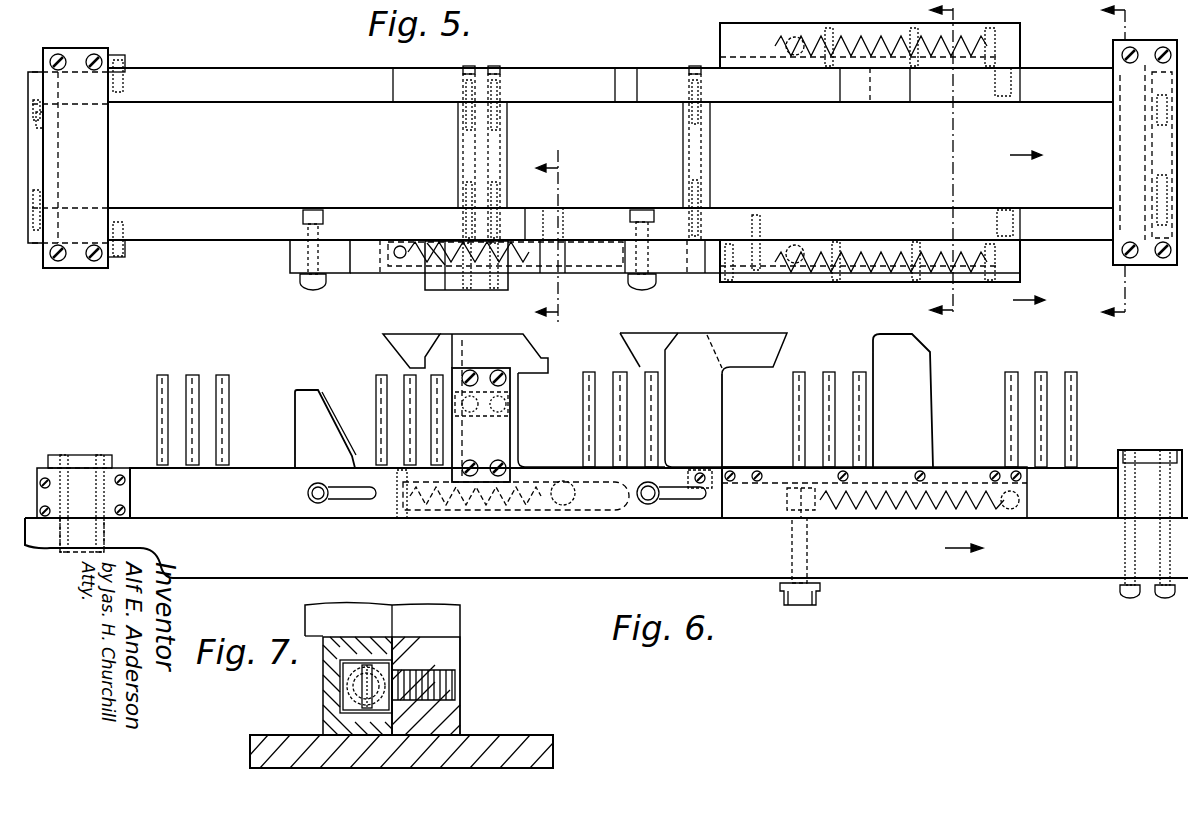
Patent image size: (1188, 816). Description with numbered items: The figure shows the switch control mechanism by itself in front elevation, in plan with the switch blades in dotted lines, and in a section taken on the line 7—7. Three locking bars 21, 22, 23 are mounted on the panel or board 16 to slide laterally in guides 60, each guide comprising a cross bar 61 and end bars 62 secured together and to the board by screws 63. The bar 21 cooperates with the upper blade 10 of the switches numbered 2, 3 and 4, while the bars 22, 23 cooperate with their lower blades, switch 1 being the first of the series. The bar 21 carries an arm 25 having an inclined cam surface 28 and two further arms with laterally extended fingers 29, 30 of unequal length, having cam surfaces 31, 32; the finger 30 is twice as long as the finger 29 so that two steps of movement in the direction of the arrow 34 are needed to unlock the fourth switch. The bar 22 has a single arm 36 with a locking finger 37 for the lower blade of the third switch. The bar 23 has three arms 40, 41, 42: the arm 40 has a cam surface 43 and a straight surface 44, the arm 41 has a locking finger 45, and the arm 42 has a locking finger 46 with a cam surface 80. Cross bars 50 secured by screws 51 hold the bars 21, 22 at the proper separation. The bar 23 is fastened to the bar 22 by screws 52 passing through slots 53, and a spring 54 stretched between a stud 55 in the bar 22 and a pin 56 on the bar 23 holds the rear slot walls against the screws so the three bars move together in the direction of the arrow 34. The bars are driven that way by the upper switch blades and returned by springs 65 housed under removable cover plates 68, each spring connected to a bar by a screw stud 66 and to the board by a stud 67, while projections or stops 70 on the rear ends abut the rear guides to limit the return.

In FIG. 6, the switch 1 is at (1005, 396).
In FIG. 6, the switch 2 is at (778, 421).
In FIG. 5, the switch 3 is at (953, 168).
In FIG. 6, the switch 3 is at (583, 405).
In FIG. 5, the switch 4 is at (1126, 171).
In FIG. 6, the switch 4 is at (296, 382).
In FIG. 5, the section line 7 is at (550, 241).
In FIG. 6, the upper blade 10 is at (236, 365).
In FIG. 6, the panel or board 16 is at (882, 578).
In FIG. 7, the panel or board 16 is at (401, 751).
In FIG. 5, the bar 21 is at (290, 68).
In FIG. 5, the bar 22 is at (292, 190).
In FIG. 6, the bar 22 is at (262, 455).
In FIG. 7, the bar 22 is at (460, 665).
In FIG. 5, the bar 23 is at (372, 273).
In FIG. 6, the bar 23 is at (296, 520).
In FIG. 7, the bar 23 is at (323, 677).
In FIG. 6, the arm 25 is at (933, 415).
In FIG. 6, the cam surface 28 is at (855, 345).
In FIG. 6, the finger 29 is at (655, 333).
In FIG. 6, the finger 30 is at (410, 334).
In FIG. 6, the cam surface 31 is at (625, 340).
In FIG. 6, the cam surface 32 is at (383, 336).
In FIG. 5, the arrow 34 is at (1025, 240).
In FIG. 6, the arrow 34 is at (961, 559).
In FIG. 6, the arm 36 is at (518, 398).
In FIG. 6, the locking finger 37 is at (535, 358).
In FIG. 6, the arm 40 is at (295, 405).
In FIG. 5, the arm 41 is at (466, 265).
In FIG. 6, the arm 41 is at (490, 445).
In FIG. 6, the arm 42 is at (722, 440).
In FIG. 6, the cam surface 43 is at (340, 415).
In FIG. 6, the straight surface 44 is at (355, 428).
In FIG. 6, the locking finger 45 is at (470, 334).
In FIG. 6, the locking finger 46 is at (763, 368).
In FIG. 5, the cross bars 50 is at (58, 160).
In FIG. 5, the screws 51 is at (48, 125).
In FIG. 6, the screws 52 is at (305, 492).
In FIG. 6, the slots 53 is at (350, 499).
In FIG. 6, the spring 54 is at (495, 505).
In FIG. 7, the spring 54 is at (368, 665).
In FIG. 5, the stud 55 is at (560, 252).
In FIG. 6, the stud 55 is at (565, 505).
In FIG. 7, the stud 55 is at (350, 700).
In FIG. 5, the pin 56 is at (400, 246).
In FIG. 6, the pin 56 is at (400, 518).
In FIG. 5, the guides 60 is at (108, 163).
In FIG. 6, the guides 60 is at (1118, 490).
In FIG. 5, the cross bar 61 is at (102, 135).
In FIG. 6, the cross bar 61 is at (82, 443).
In FIG. 6, the end bars 62 is at (88, 515).
In FIG. 5, the screws 63 is at (62, 262).
In FIG. 6, the screws 63 is at (68, 480).
In FIG. 5, the springs 65 is at (890, 68).
In FIG. 6, the springs 65 is at (920, 510).
In FIG. 5, the screw studs 66 is at (1010, 80).
In FIG. 6, the screw studs 66 is at (1010, 510).
In FIG. 5, the studs 67 is at (795, 58).
In FIG. 6, the studs 67 is at (787, 500).
In FIG. 5, the removable cover plates 68 is at (868, 12).
In FIG. 6, the removable cover plates 68 is at (960, 467).
In FIG. 5, the projections or stops 70 is at (125, 255).
In FIG. 6, the projections or stops 70 is at (130, 492).
In FIG. 6, the cam surface 80 is at (782, 350).